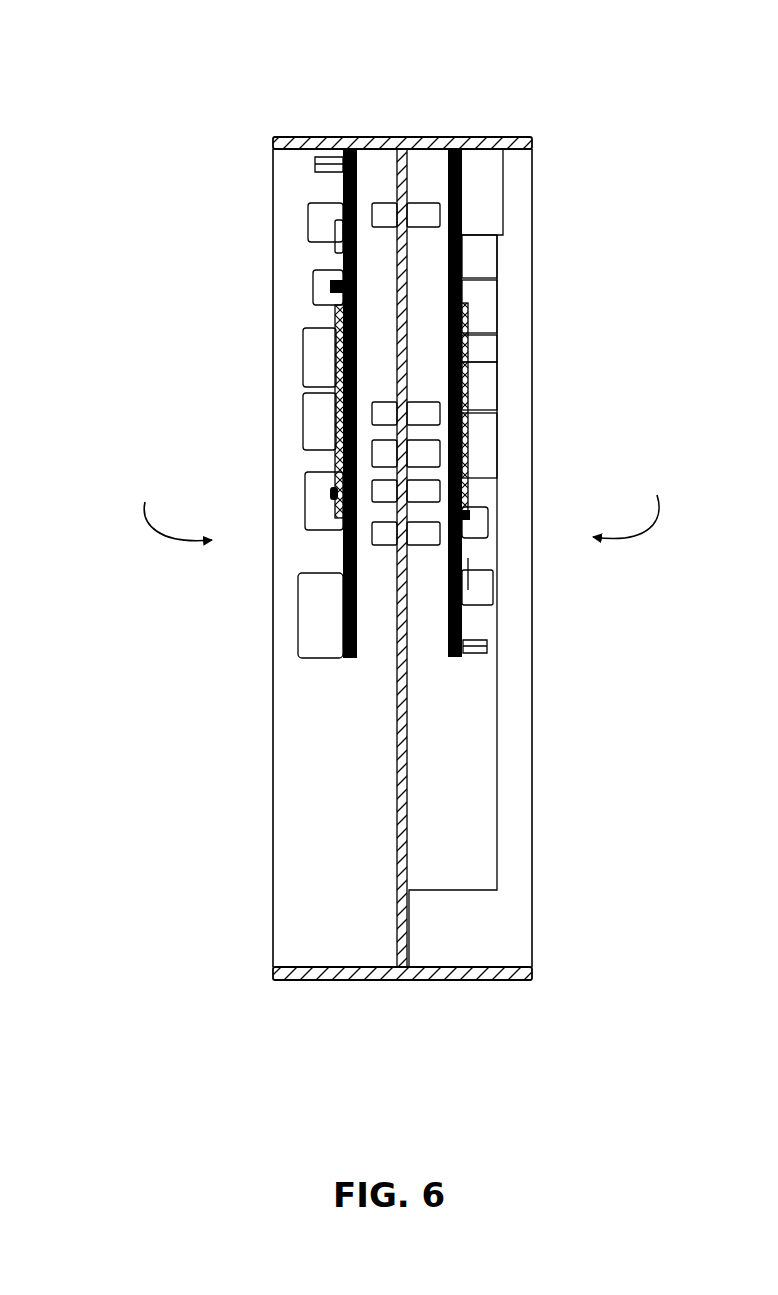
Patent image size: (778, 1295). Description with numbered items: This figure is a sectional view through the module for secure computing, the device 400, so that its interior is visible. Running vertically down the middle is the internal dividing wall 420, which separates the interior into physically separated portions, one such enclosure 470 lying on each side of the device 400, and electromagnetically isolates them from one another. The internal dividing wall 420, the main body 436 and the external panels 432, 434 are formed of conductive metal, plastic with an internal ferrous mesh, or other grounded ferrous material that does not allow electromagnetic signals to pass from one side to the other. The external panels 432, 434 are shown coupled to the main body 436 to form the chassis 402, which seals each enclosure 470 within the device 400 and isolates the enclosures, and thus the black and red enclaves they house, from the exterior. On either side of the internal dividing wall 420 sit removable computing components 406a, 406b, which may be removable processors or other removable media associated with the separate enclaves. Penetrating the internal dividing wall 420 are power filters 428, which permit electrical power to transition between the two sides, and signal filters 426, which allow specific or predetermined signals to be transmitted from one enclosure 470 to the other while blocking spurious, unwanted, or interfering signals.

The device 400 is at (354, 495).
The chassis 402 is at (327, 140).
The internal dividing wall 420 is at (398, 178).
The main body 436 is at (445, 142).
The power filters 428 is at (428, 212).
The external panel 434 is at (273, 248).
The external panel 432 is at (532, 293).
The removable computing component 406a is at (340, 427).
The removable computing component 406b is at (465, 437).
The signal filters 426 is at (378, 537).
The enclosure 470 is at (400, 506).